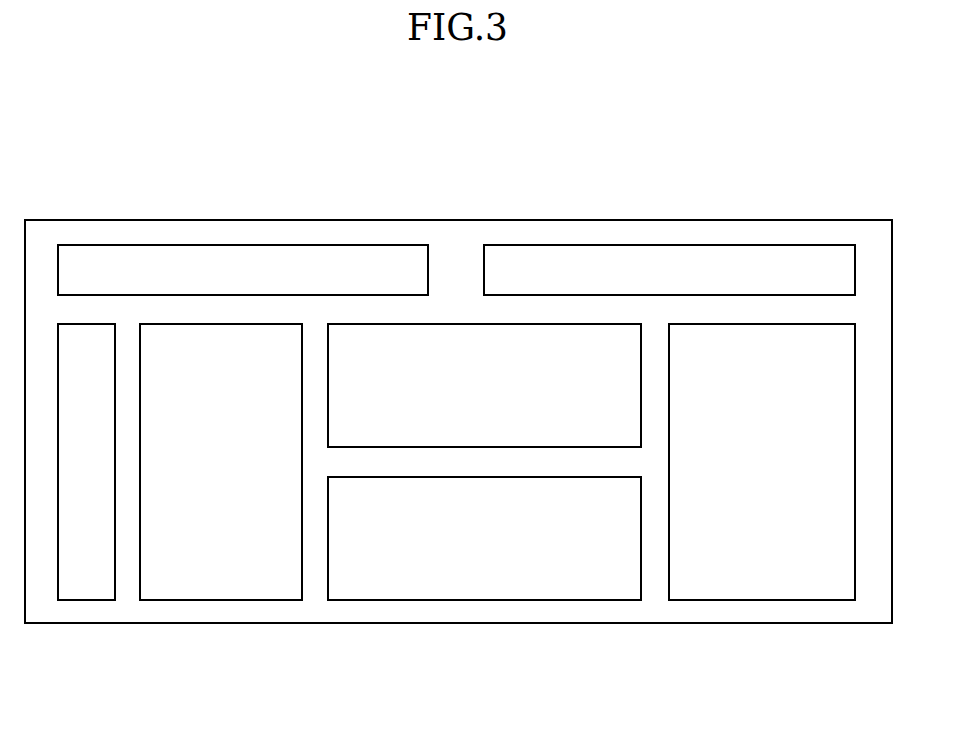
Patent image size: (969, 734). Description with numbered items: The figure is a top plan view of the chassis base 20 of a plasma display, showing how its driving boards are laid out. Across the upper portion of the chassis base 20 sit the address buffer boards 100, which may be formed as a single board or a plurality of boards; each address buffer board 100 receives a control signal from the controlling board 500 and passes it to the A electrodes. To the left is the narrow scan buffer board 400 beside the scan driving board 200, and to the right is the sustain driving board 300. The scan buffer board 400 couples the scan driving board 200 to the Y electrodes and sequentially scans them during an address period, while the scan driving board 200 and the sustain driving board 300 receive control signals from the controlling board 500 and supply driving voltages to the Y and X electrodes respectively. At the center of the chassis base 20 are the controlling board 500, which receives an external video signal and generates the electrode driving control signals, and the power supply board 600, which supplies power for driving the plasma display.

The chassis base 20 is at (840, 220).
The address buffer board 100 is at (163, 245).
The scan driving board 200 is at (215, 601).
The sustain driving board 300 is at (758, 601).
The scan buffer board 400 is at (80, 601).
The controlling board 500 is at (487, 601).
The power supply board 600 is at (458, 324).